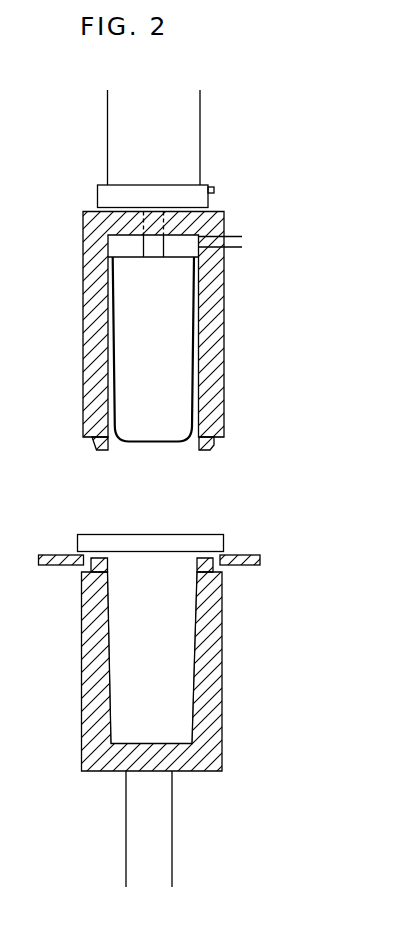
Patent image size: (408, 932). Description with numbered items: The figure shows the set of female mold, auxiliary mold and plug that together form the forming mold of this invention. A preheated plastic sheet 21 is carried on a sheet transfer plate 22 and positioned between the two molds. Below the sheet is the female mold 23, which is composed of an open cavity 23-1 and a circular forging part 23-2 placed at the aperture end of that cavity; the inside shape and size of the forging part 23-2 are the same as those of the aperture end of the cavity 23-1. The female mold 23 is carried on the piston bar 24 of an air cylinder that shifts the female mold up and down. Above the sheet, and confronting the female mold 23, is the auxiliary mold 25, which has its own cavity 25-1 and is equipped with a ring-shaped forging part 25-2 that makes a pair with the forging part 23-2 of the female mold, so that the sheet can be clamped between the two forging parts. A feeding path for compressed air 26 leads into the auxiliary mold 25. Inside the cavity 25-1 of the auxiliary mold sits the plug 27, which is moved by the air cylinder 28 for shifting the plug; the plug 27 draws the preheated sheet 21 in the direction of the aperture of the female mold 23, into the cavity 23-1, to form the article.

The preheated plastic sheet 21 is at (210, 535).
The sheet transfer plate 22 is at (260, 560).
The female mold 23 is at (217, 655).
The cavity of the female mold 23-1 is at (197, 620).
The forging part of the female mold 23-2 is at (110, 556).
The piston bar of the air cylinder for up-down shifting the female mold 24 is at (167, 810).
The auxiliary mold 25 is at (217, 382).
The cavity of the auxiliary mold 25-1 is at (194, 432).
The forging part of the auxiliary mold 25-2 is at (213, 445).
The feeding path for compressed air 26 is at (245, 239).
The plug 27 is at (185, 337).
The air cylinder for shifting the plug 28 is at (193, 130).